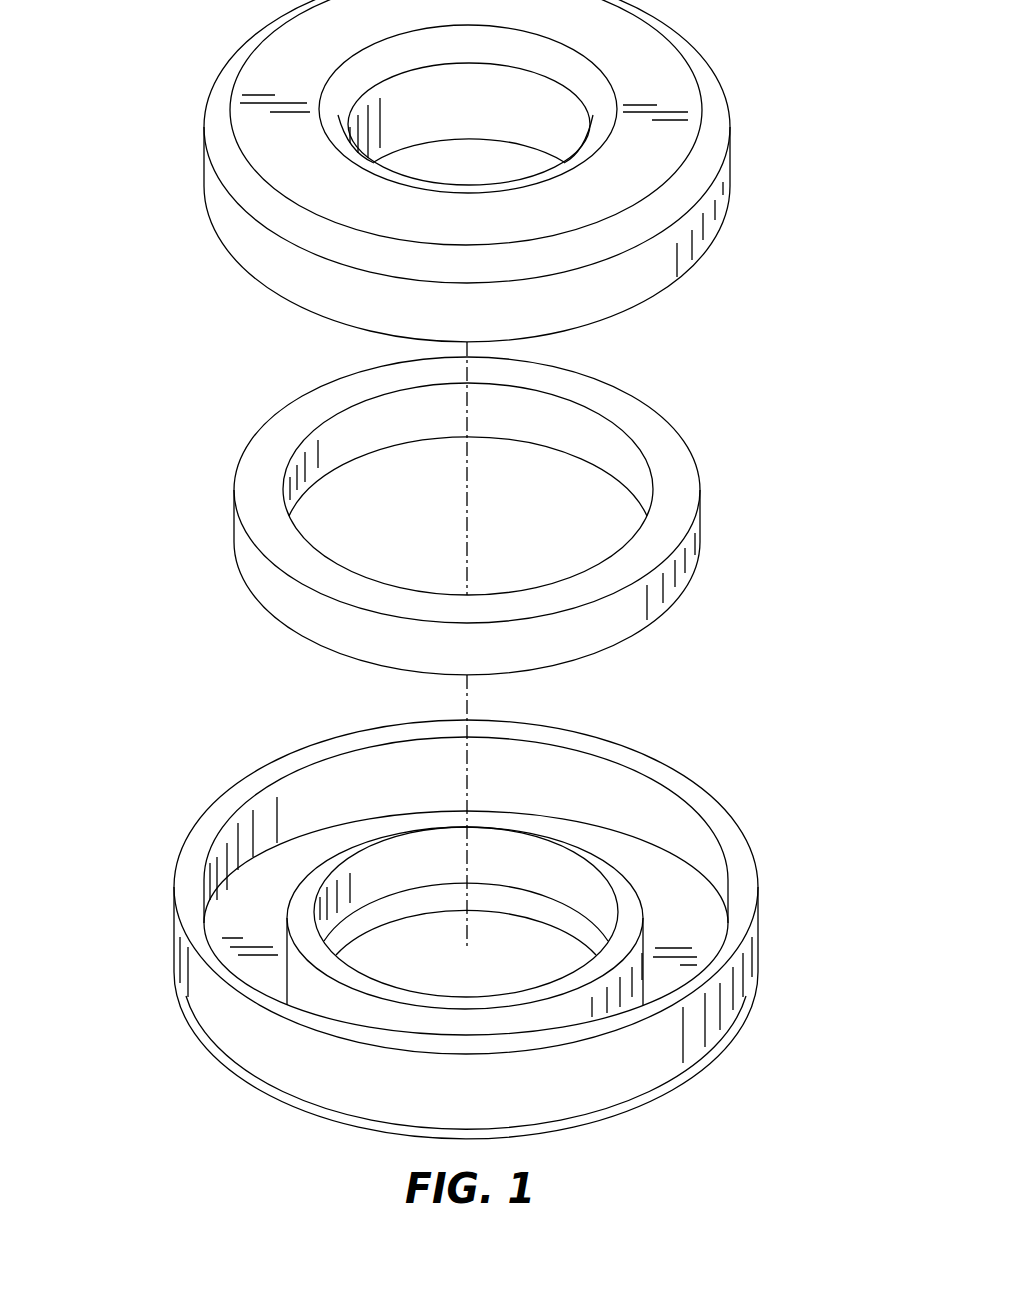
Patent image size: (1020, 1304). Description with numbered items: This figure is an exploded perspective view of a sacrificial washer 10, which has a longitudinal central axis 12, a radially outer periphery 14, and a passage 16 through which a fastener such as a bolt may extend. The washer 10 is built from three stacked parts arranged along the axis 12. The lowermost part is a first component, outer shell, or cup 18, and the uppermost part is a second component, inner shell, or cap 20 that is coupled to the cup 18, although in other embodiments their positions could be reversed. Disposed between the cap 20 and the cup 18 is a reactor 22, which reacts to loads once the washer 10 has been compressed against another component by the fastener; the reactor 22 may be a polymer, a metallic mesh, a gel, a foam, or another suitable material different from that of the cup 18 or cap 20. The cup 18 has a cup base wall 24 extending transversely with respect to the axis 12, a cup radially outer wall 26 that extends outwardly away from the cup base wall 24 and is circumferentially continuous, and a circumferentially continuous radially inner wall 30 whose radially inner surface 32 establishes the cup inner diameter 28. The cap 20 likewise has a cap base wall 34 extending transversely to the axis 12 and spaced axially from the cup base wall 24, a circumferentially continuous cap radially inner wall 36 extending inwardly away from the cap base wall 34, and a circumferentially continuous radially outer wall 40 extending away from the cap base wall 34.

The sacrificial washer 10 is at (166, 92).
The longitudinal central axis 12 is at (468, 485).
The radially outer periphery 14 is at (153, 899).
The passage 16 is at (403, 534).
The cup 18 is at (780, 897).
The cap 20 is at (746, 93).
The reactor 22 is at (721, 488).
The cup base wall 24 is at (267, 882).
The cup radially outer wall 26 is at (724, 805).
The cup inner diameter 28 is at (557, 863).
The radially inner wall 30 is at (627, 895).
The radially inner surface 32 is at (388, 863).
The cap base wall 34 is at (653, 68).
The cap radially inner wall 36 is at (530, 114).
The radially outer wall 40 is at (723, 200).